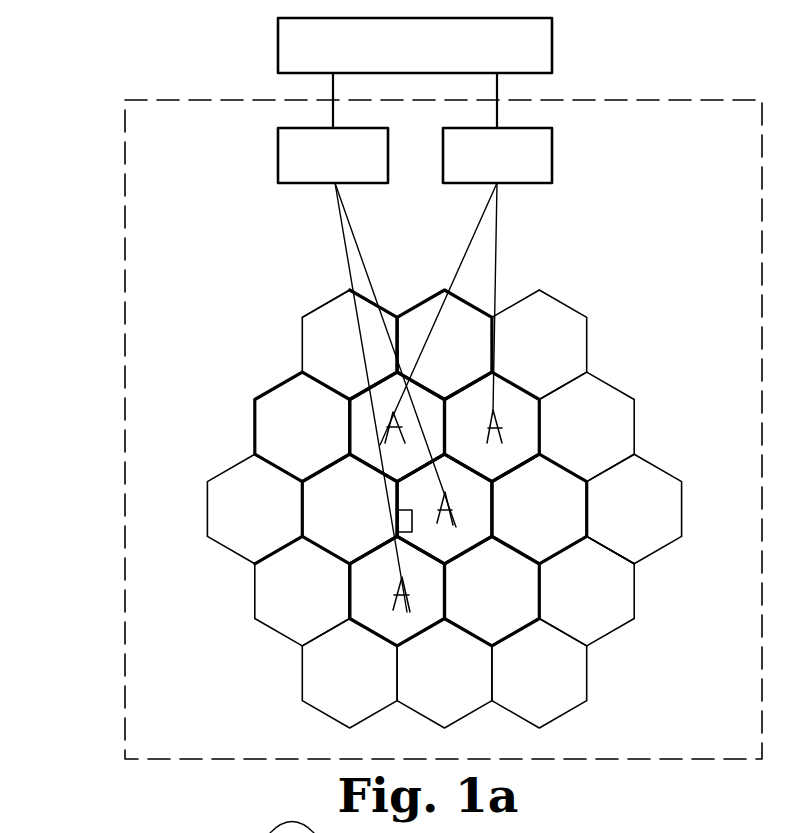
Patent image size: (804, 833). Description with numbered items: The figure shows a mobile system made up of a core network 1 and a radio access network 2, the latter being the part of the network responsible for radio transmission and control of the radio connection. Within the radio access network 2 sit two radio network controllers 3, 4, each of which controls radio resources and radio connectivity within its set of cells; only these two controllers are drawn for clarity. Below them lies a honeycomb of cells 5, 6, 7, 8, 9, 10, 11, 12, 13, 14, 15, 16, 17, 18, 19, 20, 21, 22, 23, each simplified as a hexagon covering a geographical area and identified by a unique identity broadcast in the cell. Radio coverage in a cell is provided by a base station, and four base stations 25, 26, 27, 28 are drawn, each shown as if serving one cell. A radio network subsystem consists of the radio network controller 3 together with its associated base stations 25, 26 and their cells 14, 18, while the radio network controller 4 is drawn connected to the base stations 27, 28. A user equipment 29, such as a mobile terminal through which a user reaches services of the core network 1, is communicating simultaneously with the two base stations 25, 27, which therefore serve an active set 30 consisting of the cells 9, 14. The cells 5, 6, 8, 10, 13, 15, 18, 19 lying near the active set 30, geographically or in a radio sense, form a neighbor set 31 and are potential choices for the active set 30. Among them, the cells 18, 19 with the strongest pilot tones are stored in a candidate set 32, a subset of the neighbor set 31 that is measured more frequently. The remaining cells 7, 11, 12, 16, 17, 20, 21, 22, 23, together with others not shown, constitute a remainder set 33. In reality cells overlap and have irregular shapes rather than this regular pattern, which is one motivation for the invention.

The core network 1 is at (278, 50).
The radio access network 2 is at (125, 237).
The radio network controller 3 is at (278, 152).
The radio network controller 4 is at (552, 148).
The cell 5 is at (349, 345).
The cell 6 is at (444, 345).
The cell 7 is at (539, 345).
The cell 8 is at (302, 427).
The cell 9 is at (397, 427).
The cell 10 is at (492, 427).
The cell 11 is at (586, 427).
The cell 12 is at (254, 509).
The cell 13 is at (349, 509).
The cell 14 is at (444, 509).
The cell 15 is at (539, 509).
The cell 16 is at (634, 509).
The cell 17 is at (302, 591).
The cell 18 is at (397, 591).
The cell 19 is at (492, 591).
The cell 20 is at (586, 591).
The cell 21 is at (349, 674).
The cell 22 is at (444, 674).
The cell 23 is at (539, 674).
The base station 25 is at (458, 527).
The base station 26 is at (412, 613).
The base station 27 is at (395, 416).
The base station 28 is at (502, 428).
The user equipment 29 is at (412, 528).
The active set 30 is at (388, 390).
The neighbor set 31 is at (326, 305).
The candidate set 32 is at (385, 562).
The remainder set 33 is at (587, 573).